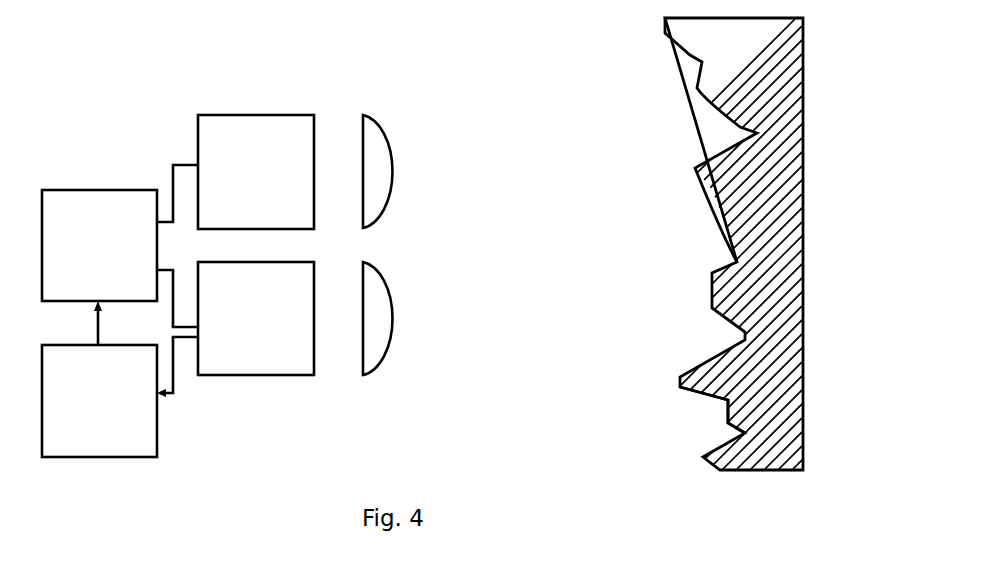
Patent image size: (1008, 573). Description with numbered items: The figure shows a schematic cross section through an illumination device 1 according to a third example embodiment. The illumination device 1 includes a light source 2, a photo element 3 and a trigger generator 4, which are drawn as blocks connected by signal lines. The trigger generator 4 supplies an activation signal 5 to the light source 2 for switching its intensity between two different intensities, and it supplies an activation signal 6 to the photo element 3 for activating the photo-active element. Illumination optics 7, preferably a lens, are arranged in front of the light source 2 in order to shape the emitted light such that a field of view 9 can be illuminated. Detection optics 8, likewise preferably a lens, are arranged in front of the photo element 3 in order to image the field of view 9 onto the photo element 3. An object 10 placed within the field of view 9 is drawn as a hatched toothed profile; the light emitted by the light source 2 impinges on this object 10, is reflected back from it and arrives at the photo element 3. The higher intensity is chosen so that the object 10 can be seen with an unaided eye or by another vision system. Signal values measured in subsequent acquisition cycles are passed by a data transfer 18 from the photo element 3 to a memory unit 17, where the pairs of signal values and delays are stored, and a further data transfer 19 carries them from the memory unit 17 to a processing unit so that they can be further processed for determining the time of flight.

The illumination device 1 is at (251, 38).
The light source 2 is at (232, 150).
The photo element 3 is at (260, 340).
The trigger generator 4 is at (92, 238).
The activation signal for light source 5 is at (173, 180).
The activation signal for photo-active element 6 is at (173, 277).
The illumination optics 7 is at (379, 163).
The detection optics 8 is at (378, 312).
The field of view 9 is at (531, 50).
The object 10 is at (737, 382).
The memory unit 17 is at (95, 390).
The data transfer photo-active element—memory unit 18 is at (178, 393).
The data transfer memory unit—processing unit 19 is at (97, 323).